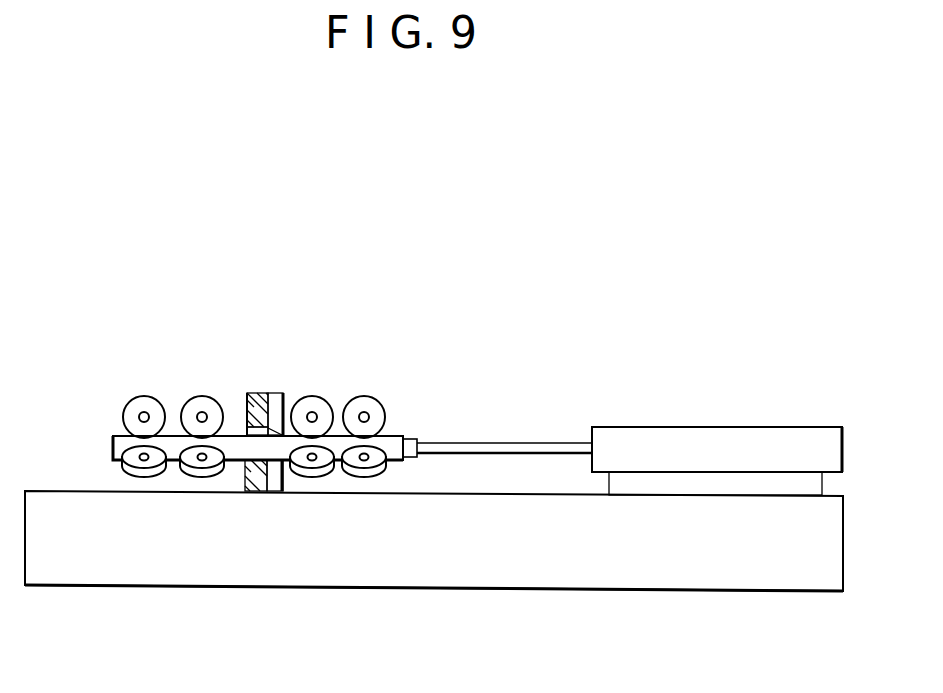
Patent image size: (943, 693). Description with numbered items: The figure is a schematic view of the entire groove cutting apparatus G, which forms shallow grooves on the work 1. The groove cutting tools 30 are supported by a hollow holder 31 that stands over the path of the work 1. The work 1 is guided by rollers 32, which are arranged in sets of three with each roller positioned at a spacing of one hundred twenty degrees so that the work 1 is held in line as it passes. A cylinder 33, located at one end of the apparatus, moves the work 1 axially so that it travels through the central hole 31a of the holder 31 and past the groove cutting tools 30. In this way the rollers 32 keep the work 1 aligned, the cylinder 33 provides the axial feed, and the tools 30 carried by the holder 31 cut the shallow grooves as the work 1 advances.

The groove cutting apparatus G is at (92, 400).
The work 1 is at (392, 443).
The groove cutting tools 30 is at (277, 413).
The hollow holder 31 is at (258, 397).
The central hole 31a is at (245, 435).
The rollers 32 is at (368, 477).
The cylinder 33 is at (643, 438).